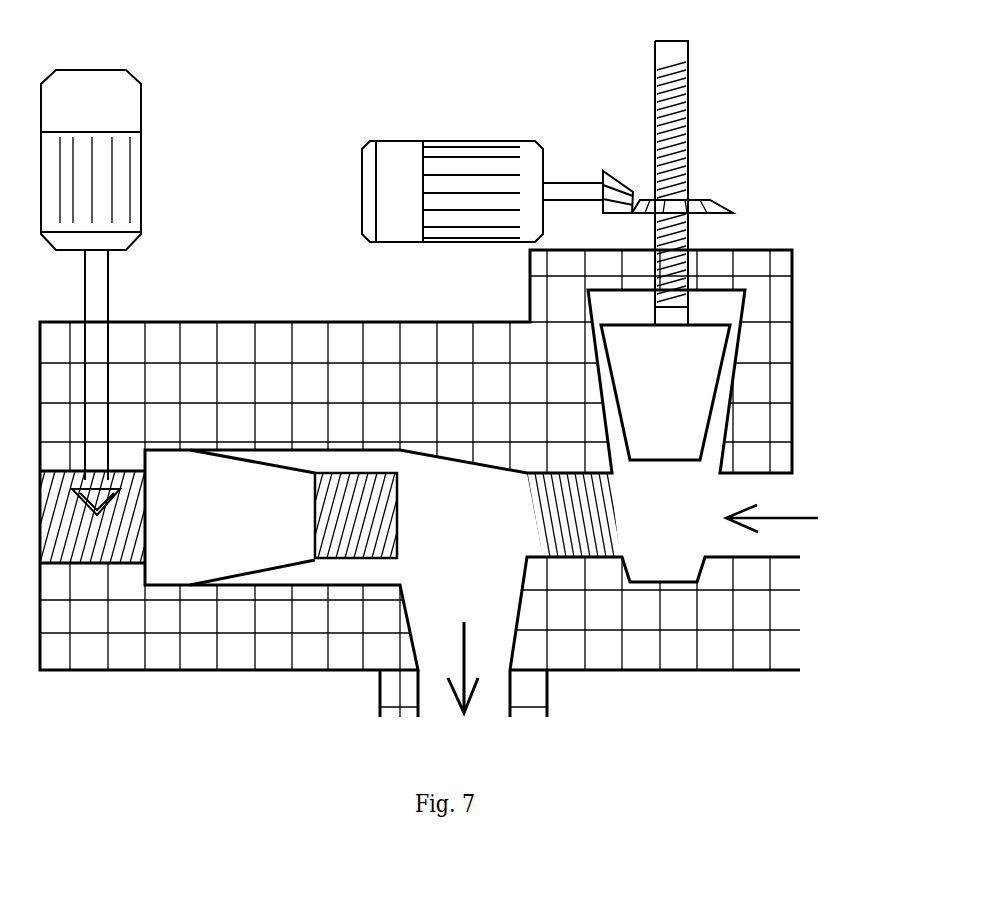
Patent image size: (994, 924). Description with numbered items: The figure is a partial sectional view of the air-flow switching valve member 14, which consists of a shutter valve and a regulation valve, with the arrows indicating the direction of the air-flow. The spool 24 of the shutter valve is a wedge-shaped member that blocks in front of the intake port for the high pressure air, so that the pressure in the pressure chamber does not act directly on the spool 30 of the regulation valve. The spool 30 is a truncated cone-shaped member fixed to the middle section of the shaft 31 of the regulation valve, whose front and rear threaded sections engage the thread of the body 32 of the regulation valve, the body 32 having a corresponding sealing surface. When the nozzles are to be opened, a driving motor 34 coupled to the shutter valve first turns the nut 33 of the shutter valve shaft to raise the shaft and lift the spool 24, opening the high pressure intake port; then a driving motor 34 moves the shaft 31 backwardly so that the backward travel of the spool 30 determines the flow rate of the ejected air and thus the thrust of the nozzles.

The air-flow switching valve member 14 is at (312, 390).
The spool of a shutter valve 24 is at (653, 389).
The spool of a regulation valve 30 is at (237, 532).
The shaft of the regulation valve 31 is at (117, 515).
The body of the regulation valve 32 is at (548, 505).
The nut of the shaft of the shutter valve 33 is at (712, 203).
The driving motor 34 is at (125, 108).